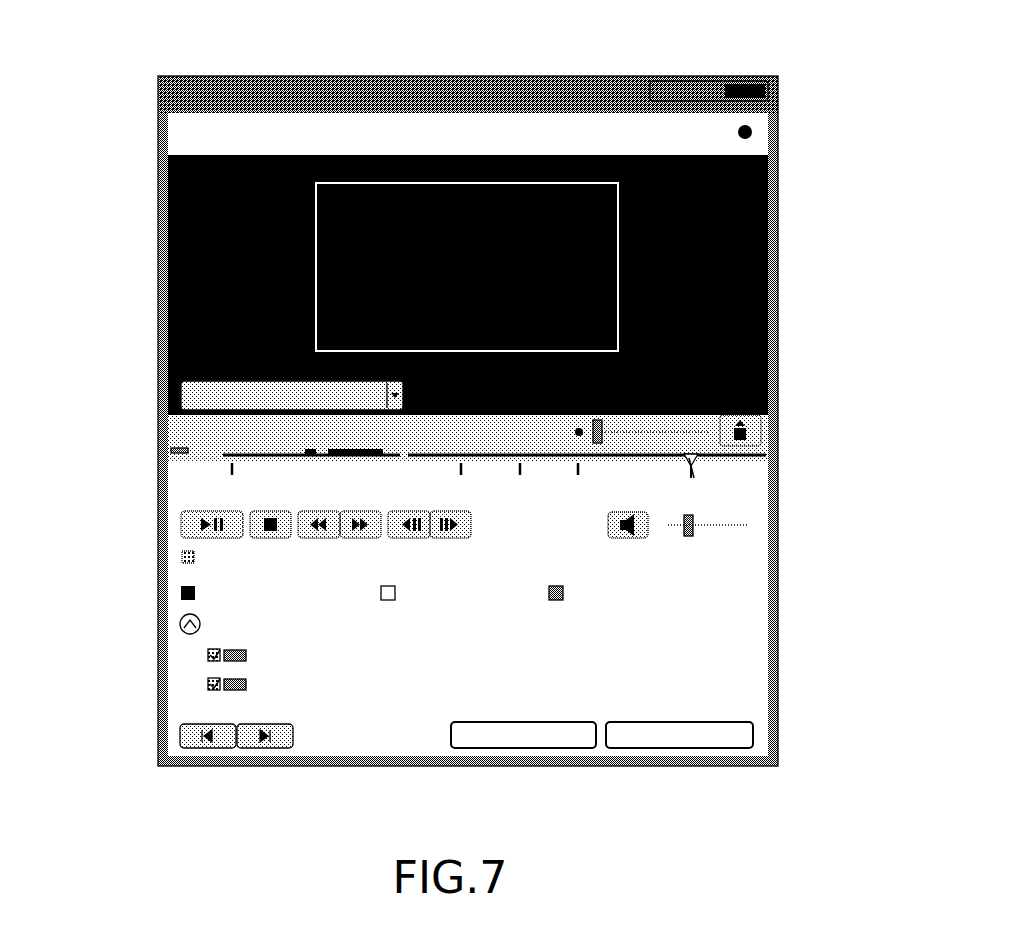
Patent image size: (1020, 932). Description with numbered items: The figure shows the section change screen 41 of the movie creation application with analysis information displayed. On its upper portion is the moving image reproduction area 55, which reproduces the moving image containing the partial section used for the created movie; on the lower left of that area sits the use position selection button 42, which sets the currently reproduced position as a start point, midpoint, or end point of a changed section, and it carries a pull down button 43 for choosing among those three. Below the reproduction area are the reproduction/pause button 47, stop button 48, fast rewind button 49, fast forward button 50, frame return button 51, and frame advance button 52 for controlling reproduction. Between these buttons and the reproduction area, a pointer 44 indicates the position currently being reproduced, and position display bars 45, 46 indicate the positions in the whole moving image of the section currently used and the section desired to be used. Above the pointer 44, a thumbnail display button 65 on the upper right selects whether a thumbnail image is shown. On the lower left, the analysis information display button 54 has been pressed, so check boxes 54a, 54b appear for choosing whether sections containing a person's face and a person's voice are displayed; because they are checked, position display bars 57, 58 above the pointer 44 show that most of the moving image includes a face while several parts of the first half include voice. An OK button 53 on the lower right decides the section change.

The section change screen 41 is at (584, 68).
The use position selection button 42 is at (173, 388).
The pull down button 43 is at (385, 373).
The pointer 44 is at (690, 447).
The position display bar 45 is at (686, 470).
The position display bar 46 is at (684, 460).
The reproduction/pause button 47 is at (173, 517).
The stop button 48 is at (262, 503).
The fast rewind button 49 is at (313, 531).
The fast forward button 50 is at (355, 531).
The frame return button 51 is at (401, 531).
The frame advance button 52 is at (441, 531).
The OK button 53 is at (535, 734).
The analysis information display button 54 is at (172, 616).
The check box 54a is at (200, 648).
The check box 54b is at (200, 676).
The moving image reproduction area 55 is at (308, 278).
The position display bar 57 is at (263, 447).
The position display bar 58 is at (172, 447).
The thumbnail display button 65 is at (752, 423).